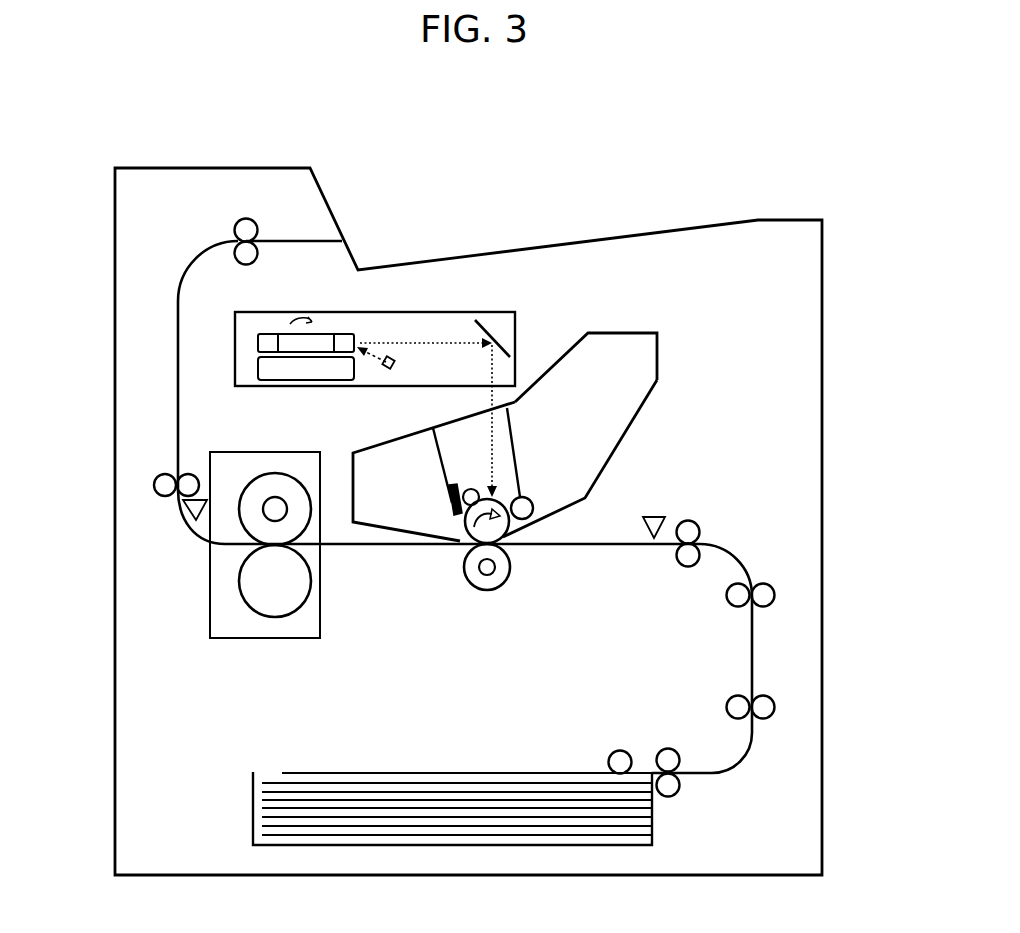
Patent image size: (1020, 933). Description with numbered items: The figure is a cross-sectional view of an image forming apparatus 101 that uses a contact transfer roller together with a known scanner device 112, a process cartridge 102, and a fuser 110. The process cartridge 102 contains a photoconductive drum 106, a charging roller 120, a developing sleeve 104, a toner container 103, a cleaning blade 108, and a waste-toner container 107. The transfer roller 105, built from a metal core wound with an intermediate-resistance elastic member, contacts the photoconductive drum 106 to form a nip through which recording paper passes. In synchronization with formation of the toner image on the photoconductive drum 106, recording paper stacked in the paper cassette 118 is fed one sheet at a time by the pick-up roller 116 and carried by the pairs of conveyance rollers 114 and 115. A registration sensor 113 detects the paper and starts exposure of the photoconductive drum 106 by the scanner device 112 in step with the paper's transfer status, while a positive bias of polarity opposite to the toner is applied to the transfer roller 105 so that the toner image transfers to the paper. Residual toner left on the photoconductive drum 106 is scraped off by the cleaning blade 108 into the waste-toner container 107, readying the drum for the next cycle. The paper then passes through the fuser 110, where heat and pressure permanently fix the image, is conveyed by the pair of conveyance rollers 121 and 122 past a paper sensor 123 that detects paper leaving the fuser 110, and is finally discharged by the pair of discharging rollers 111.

The image forming apparatus 101 is at (822, 364).
The process cartridge 102 is at (658, 366).
The toner container 103 is at (605, 353).
The developing sleeve 104 is at (528, 498).
The transfer roller 105 is at (493, 590).
The photoconductive drum 106 is at (471, 535).
The waste-toner container 107 is at (420, 508).
The cleaning blade 108 is at (456, 484).
The fuser 110 is at (252, 452).
The discharging rollers 111 is at (246, 216).
The scanner device 112 is at (516, 318).
The registration sensor 113 is at (660, 517).
The conveyance rollers 114 is at (680, 787).
The conveyance rollers 115 is at (682, 560).
The pick-up roller 116 is at (609, 752).
The paper cassette 118 is at (253, 800).
The charging roller 120 is at (478, 487).
The conveyance rollers 121 is at (195, 473).
The conveyance rollers 122 is at (165, 496).
The paper sensor 123 is at (184, 520).